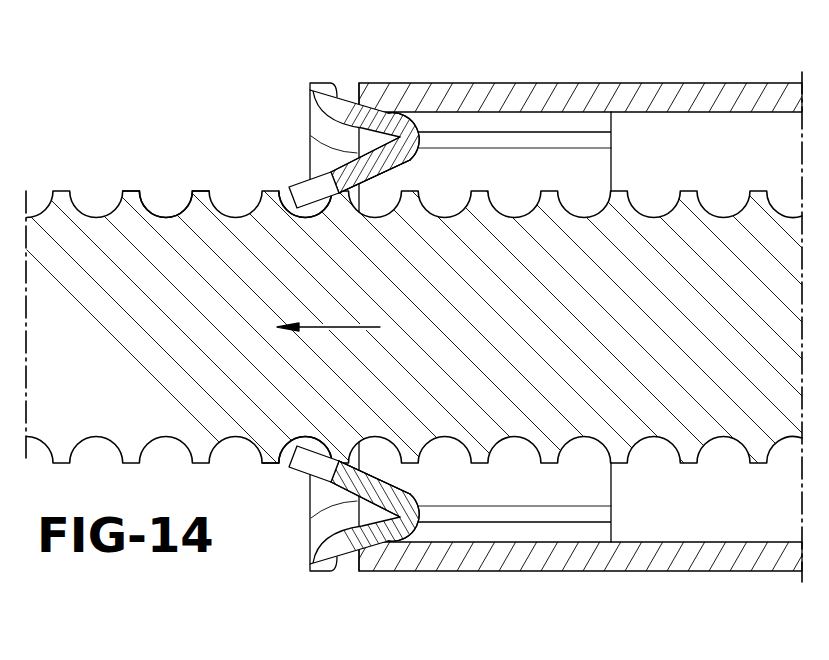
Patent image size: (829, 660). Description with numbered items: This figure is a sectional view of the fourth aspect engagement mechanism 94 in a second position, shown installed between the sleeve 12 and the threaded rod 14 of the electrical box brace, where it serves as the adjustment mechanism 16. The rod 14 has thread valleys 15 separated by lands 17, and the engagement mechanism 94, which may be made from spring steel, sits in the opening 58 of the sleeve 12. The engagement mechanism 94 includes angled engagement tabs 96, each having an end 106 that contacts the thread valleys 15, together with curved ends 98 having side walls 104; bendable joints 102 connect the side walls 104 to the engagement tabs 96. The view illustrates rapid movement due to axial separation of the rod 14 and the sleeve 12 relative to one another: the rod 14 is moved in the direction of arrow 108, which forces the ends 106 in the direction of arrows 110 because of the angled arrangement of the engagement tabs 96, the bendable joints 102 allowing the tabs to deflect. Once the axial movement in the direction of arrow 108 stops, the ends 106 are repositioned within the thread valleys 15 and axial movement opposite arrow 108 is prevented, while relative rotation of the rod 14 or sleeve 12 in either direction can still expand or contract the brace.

The sleeve 12 is at (656, 75).
The rod 14 is at (108, 203).
The thread valleys 15 is at (164, 216).
The adjustment mechanism 16 is at (206, 70).
The ridge 17 is at (133, 190).
The opening 58 is at (646, 530).
The engagement mechanism 94 is at (614, 160).
The engagement tabs 96 is at (423, 160).
The curved ends 98 is at (323, 88).
The bendable joints 102 is at (410, 123).
The side walls 104 is at (380, 122).
The end 106 is at (291, 188).
The arrow 108 is at (353, 328).
The arrows 110 is at (372, 191).